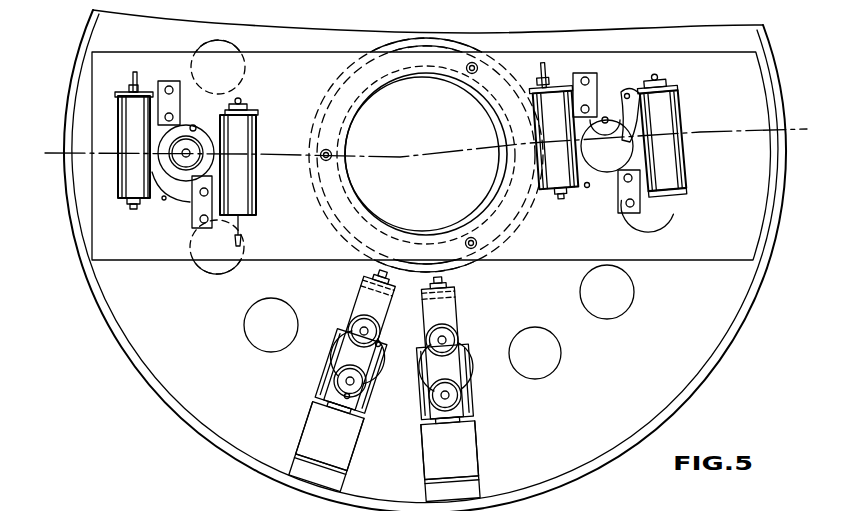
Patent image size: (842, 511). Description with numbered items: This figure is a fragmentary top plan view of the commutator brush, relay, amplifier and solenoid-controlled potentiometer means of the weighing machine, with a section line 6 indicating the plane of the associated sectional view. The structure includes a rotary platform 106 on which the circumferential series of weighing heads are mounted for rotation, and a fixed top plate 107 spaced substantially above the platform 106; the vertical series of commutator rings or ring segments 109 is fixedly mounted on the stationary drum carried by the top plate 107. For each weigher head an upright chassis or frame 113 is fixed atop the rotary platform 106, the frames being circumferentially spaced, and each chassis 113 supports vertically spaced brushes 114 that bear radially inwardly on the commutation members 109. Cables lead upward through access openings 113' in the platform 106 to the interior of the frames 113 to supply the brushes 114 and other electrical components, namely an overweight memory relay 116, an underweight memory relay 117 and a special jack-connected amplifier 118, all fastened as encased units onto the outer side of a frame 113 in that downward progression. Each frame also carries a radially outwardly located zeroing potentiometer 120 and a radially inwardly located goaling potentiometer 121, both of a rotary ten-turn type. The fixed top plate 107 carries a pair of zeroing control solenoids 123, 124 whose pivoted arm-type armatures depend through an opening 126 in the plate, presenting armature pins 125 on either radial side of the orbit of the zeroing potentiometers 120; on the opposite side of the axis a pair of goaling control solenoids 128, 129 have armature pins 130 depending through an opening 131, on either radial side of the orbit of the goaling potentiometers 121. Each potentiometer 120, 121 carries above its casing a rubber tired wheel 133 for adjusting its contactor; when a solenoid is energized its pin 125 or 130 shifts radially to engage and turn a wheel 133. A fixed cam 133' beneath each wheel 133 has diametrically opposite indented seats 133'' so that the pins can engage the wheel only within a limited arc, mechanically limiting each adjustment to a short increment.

The section line 6- 6 is at (46, 136).
The rotary platform 106 is at (137, 350).
The fixed top plate 107 is at (722, 260).
The commutator rings 109 is at (448, 265).
The chassis 113 is at (346, 259).
The access openings 113' is at (431, 208).
The brushes 114 is at (436, 278).
The overweight memory relay 116 is at (315, 415).
The underweight memory relay 117 is at (428, 464).
The amplifier 118 is at (436, 490).
The zeroing potentiometer 120 is at (334, 375).
The goaling potentiometer 121 is at (348, 325).
The zeroing control solenoid 123 is at (118, 188).
The zeroing control solenoid 124 is at (231, 109).
The armature pins 125 is at (213, 156).
The opening 126 is at (191, 189).
The goaling control solenoid 128 is at (545, 120).
The goaling control solenoid 129 is at (672, 185).
The armature pins 130 is at (630, 139).
The opening 131 is at (606, 172).
The rubber tired wheel 133 is at (453, 262).
The fixed cam 133' is at (172, 92).
The indented seats 133'' is at (347, 380).